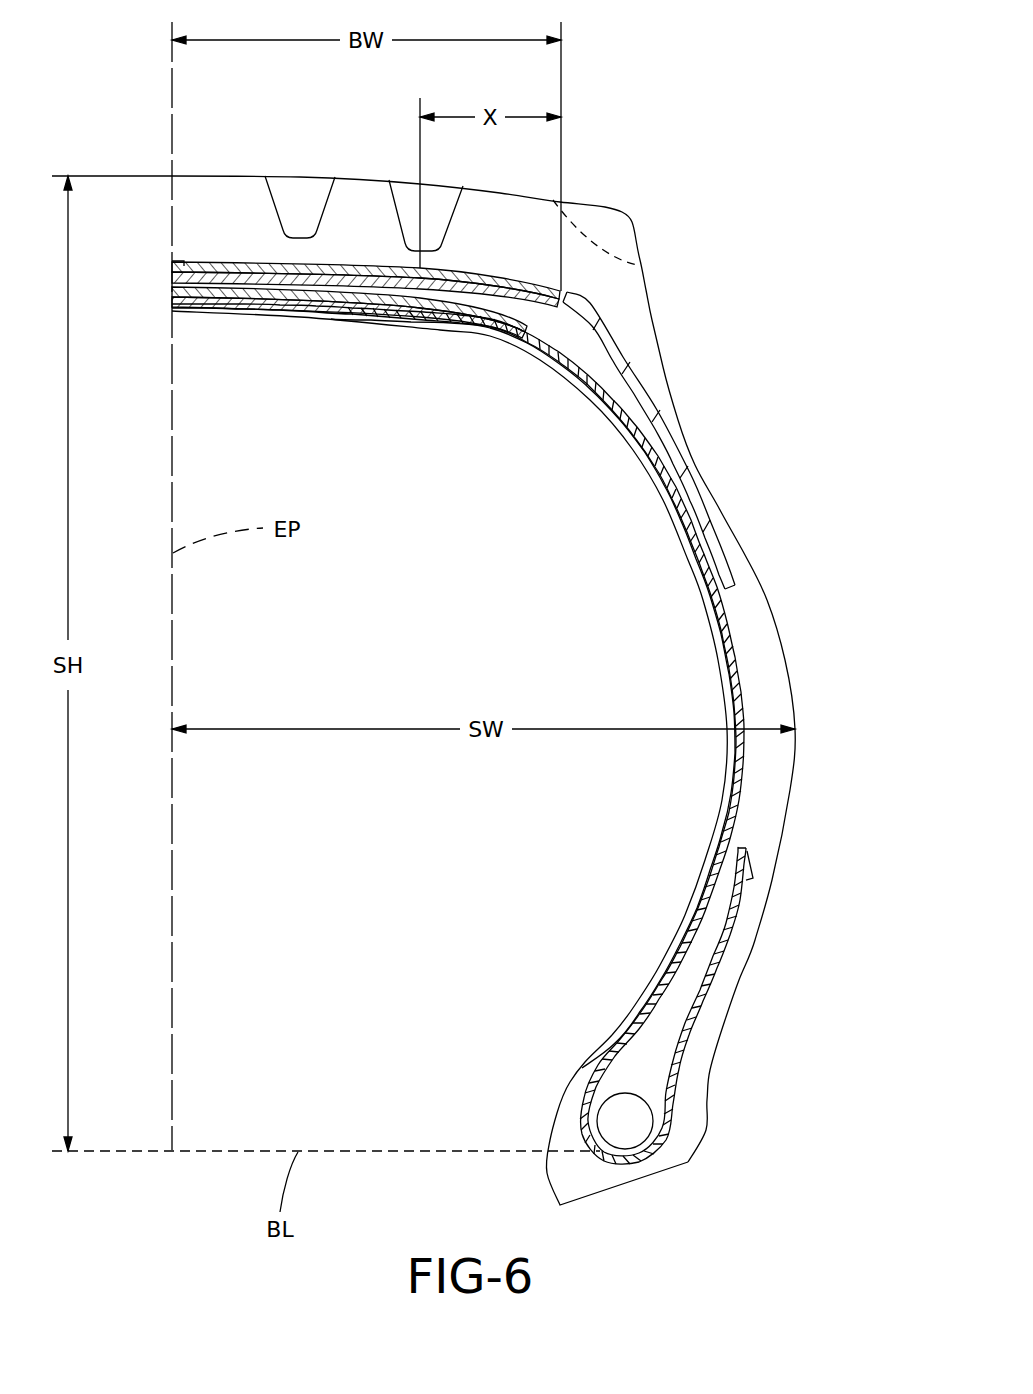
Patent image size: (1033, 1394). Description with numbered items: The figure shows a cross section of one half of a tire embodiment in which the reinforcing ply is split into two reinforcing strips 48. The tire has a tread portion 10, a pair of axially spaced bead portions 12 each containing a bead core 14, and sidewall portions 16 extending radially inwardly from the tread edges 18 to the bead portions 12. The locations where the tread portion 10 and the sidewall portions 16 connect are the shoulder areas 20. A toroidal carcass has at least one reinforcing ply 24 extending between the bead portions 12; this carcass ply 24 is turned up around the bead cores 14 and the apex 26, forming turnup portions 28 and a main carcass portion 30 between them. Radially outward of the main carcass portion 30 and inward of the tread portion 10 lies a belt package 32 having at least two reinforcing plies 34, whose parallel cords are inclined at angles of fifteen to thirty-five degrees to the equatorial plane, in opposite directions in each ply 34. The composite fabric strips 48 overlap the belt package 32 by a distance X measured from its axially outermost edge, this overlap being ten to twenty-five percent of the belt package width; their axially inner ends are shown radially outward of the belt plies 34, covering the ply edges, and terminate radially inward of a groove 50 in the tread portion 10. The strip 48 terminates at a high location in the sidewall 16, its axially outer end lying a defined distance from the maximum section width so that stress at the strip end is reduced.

The tread portion 10 is at (348, 173).
The bead portions 12 is at (530, 1081).
The bead core 14 is at (630, 1128).
The sidewall portions 16 is at (812, 640).
The tread edges 18 is at (613, 205).
The shoulder areas 20 is at (650, 317).
The reinforcing ply 24 is at (603, 405).
The apex 26 is at (642, 1052).
The turnup portions 28 is at (727, 917).
The main carcass portion 30 is at (458, 312).
The belt package 32 is at (180, 264).
The reinforcing plies 34 is at (207, 268).
The reinforcing strips 48 is at (726, 562).
The groove 50 is at (405, 205).